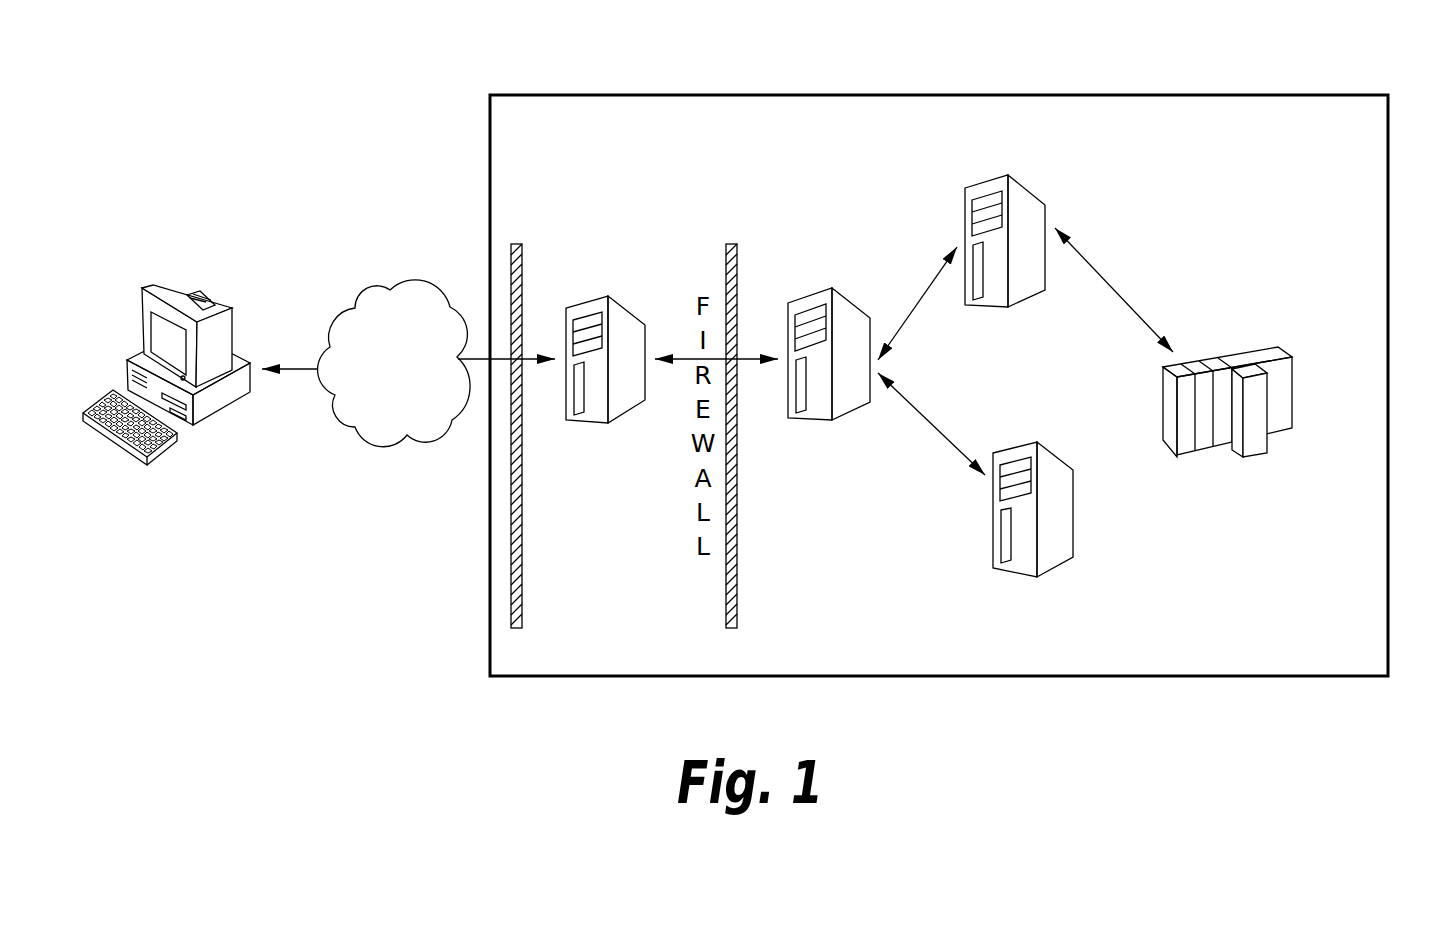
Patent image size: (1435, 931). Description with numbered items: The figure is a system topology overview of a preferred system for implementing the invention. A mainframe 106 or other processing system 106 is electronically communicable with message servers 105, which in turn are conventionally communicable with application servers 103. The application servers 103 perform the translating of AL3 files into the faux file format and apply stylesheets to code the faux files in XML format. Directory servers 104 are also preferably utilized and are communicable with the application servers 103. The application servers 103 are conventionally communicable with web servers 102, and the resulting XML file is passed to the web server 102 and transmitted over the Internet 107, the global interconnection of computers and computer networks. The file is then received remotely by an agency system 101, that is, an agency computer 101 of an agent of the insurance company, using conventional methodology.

The agency system 101 is at (190, 288).
The web server 102 is at (628, 308).
The application server 103 is at (850, 303).
The directory server 104 is at (995, 520).
The message server 105 is at (1027, 193).
The mainframe 106 is at (1212, 358).
The Internet 107 is at (375, 287).